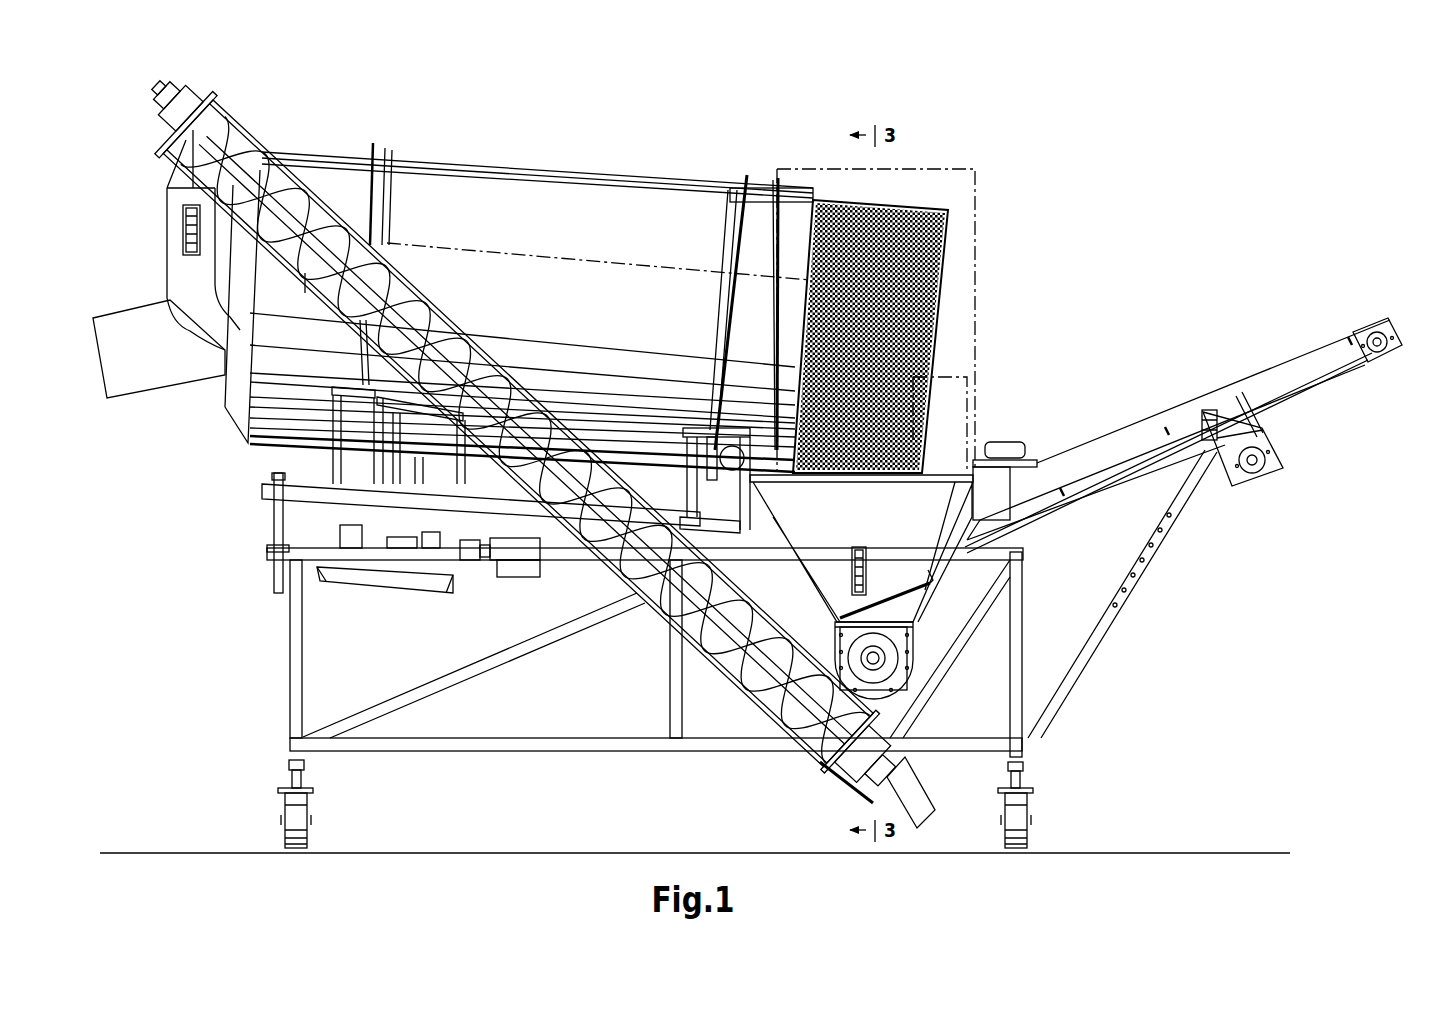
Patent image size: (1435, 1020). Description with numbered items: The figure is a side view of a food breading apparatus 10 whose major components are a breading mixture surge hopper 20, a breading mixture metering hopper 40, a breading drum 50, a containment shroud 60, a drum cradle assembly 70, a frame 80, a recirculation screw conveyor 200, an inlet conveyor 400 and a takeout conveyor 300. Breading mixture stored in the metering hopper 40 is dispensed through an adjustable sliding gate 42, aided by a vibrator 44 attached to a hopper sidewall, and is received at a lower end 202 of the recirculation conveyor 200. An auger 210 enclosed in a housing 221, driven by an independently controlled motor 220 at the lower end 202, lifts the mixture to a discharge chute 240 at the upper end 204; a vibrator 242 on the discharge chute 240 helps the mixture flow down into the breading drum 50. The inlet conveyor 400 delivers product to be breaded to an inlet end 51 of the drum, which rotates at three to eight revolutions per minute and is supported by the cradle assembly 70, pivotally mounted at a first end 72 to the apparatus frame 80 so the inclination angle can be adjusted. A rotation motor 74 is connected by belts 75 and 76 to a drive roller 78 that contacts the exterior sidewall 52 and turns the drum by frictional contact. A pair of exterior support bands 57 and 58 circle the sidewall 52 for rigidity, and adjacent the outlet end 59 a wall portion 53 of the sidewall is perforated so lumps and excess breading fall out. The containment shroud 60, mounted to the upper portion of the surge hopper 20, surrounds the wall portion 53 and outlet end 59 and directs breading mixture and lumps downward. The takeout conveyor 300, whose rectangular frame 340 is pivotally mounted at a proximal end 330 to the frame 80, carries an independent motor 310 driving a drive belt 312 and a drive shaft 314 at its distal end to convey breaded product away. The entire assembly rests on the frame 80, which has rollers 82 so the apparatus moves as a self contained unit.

The food breading apparatus 10 is at (1103, 232).
The breading mixture surge hopper 20 is at (900, 690).
The breading mixture metering hopper 40 is at (893, 585).
The adjustable sliding gate 42 is at (937, 590).
The vibrator 44 is at (852, 565).
The breading drum 50 is at (568, 279).
The inlet end 51 is at (228, 416).
The exterior sidewall 52 is at (490, 190).
The wall portion 53 is at (920, 329).
The exterior support band 57 is at (390, 155).
The exterior support band 58 is at (740, 185).
The outlet end 59 is at (950, 300).
The containment shroud 60 is at (930, 165).
The drum cradle assembly 70 is at (433, 439).
The first end 72 is at (655, 470).
The rotation motor 74 is at (525, 578).
The belt 75 is at (430, 550).
The belt 76 is at (380, 572).
The drive roller 78 is at (357, 400).
The apparatus frame 80 is at (290, 677).
The rollers 82 is at (290, 835).
The recirculation screw conveyor 200 is at (525, 441).
The lower end 202 is at (815, 762).
The upper end 204 is at (215, 98).
The auger 210 is at (785, 690).
The motor 220 is at (880, 762).
The housing 221 is at (263, 140).
The discharge chute 240 is at (170, 283).
The vibrator 242 is at (185, 225).
The takeout conveyor 300 is at (1198, 494).
The motor 310 is at (1257, 474).
The drive belt 312 is at (1322, 425).
The drive shaft 314 is at (1362, 370).
The proximal end 330 is at (1000, 548).
The takeout conveyor frame 340 is at (1385, 332).
The inlet conveyor 400 is at (159, 349).